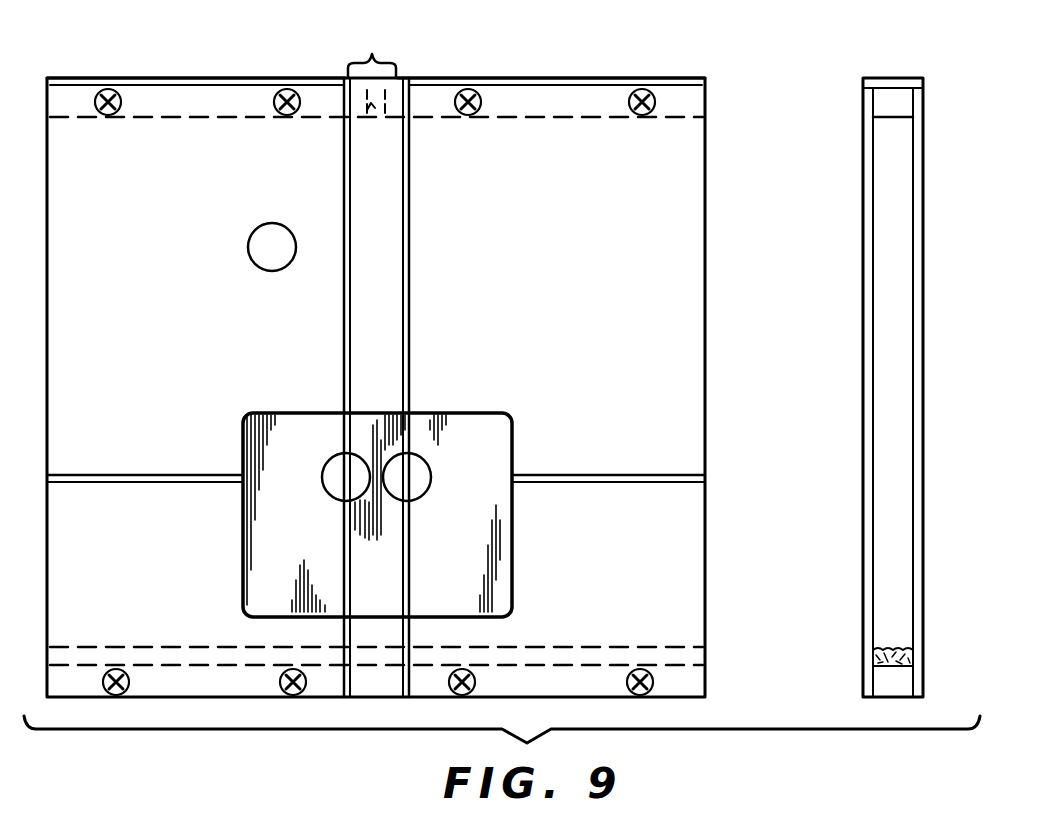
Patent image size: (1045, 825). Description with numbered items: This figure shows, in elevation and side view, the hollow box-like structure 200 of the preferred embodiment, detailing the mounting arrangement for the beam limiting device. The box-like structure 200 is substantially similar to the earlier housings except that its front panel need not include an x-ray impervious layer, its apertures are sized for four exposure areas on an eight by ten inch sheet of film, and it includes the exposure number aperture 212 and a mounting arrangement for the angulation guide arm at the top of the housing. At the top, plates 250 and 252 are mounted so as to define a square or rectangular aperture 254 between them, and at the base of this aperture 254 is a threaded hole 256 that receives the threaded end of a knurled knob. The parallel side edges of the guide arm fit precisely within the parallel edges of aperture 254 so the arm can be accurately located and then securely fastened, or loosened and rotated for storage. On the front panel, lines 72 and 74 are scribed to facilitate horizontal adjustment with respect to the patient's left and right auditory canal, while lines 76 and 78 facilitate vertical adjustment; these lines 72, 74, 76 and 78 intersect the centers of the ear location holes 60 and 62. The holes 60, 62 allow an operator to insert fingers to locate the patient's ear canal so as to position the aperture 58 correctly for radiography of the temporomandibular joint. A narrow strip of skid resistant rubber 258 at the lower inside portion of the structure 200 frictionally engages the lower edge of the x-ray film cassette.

The hollow box-like structure 200 is at (713, 73).
The plate 250 is at (233, 77).
The plate 252 is at (561, 78).
The aperture 254 is at (373, 54).
The threaded hole 256 is at (342, 118).
The strip of skid resistant rubber 258 is at (637, 643).
The exposure number aperture 212 is at (258, 243).
The line 72 is at (343, 315).
The line 74 is at (412, 318).
The line 76 is at (172, 440).
The line 78 is at (637, 468).
The aperture 58 is at (410, 585).
The ear location hole 60 is at (340, 454).
The ear location hole 62 is at (423, 457).